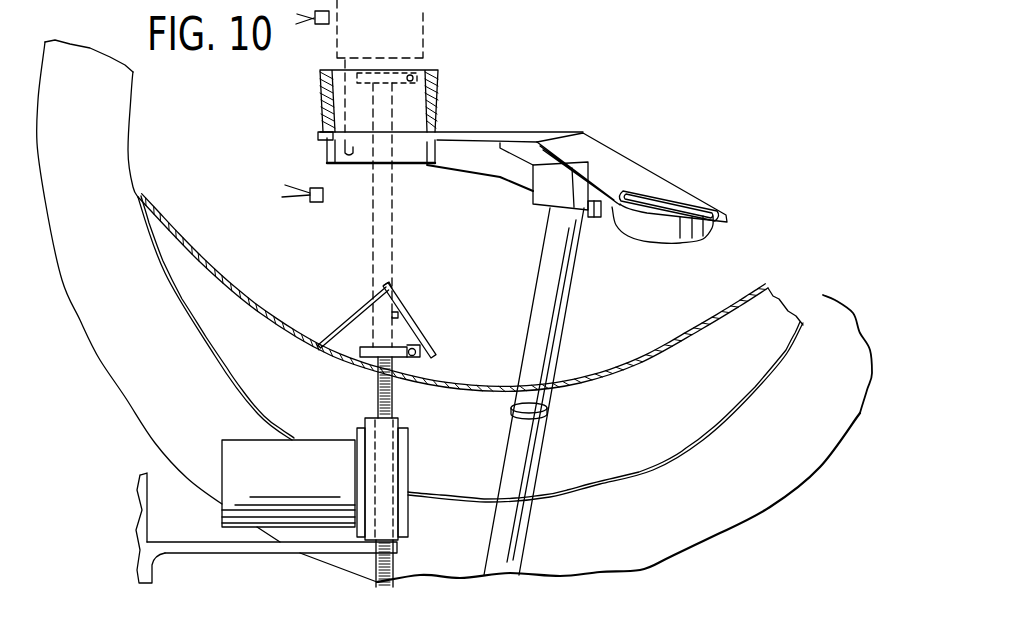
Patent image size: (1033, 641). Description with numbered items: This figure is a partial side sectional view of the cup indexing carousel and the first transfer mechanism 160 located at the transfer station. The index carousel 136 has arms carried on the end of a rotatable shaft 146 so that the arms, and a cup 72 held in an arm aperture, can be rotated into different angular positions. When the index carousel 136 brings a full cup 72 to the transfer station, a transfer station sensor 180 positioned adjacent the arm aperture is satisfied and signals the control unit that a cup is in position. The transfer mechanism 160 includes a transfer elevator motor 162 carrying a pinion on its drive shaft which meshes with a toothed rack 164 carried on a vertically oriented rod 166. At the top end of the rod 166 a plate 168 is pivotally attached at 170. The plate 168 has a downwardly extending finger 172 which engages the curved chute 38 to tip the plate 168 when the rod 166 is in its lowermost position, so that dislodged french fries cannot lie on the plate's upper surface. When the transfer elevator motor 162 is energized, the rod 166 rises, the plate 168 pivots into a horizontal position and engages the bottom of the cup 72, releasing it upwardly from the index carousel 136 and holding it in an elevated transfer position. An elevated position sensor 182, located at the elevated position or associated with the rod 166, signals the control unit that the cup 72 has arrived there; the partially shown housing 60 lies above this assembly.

The curved chute 38 is at (678, 353).
The housing 60 is at (434, 81).
The cup 72 is at (428, 39).
The index carousel 136 is at (620, 136).
The rotatable shaft 146 is at (557, 309).
The transfer mechanism 160 is at (413, 300).
The transfer elevator motor 162 is at (328, 460).
The toothed rack 164 is at (395, 406).
The rod 166 is at (393, 570).
The plate 168 is at (427, 337).
The pivot 170 is at (415, 356).
The finger 172 is at (350, 317).
The transfer station sensor 180 is at (320, 202).
The elevated position sensor 182 is at (319, 25).